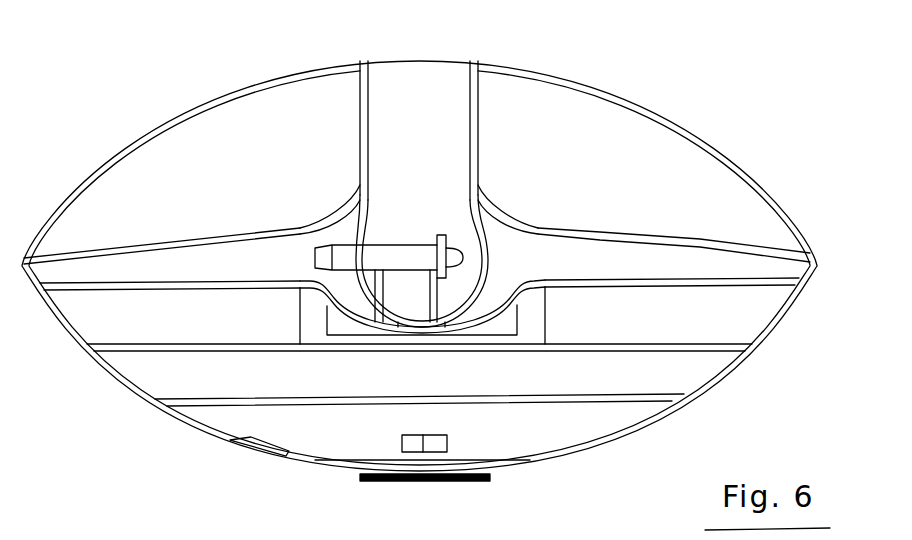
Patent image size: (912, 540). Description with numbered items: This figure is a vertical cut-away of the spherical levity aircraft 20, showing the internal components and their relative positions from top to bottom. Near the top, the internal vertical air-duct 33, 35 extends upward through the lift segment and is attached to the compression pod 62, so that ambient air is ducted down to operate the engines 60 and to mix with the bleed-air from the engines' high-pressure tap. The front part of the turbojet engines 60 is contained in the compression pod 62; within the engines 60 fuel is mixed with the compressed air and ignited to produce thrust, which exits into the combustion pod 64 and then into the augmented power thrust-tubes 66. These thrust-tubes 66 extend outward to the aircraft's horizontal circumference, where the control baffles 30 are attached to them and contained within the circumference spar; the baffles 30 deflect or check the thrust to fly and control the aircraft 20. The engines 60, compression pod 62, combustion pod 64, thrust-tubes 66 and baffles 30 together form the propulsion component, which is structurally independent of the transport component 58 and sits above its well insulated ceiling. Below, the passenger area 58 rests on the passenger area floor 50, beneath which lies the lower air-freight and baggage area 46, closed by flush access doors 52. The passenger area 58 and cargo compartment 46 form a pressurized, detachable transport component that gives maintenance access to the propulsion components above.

The spherical aircraft 20 is at (333, 66).
The control baffle 30 is at (22, 263).
The vertical air-duct 33 is at (435, 73).
The vertical air-duct 35 is at (415, 173).
The cargo compartment 46 is at (352, 433).
The passenger area floor 50 is at (552, 398).
The flush access doors 52 is at (255, 450).
The transport component 58 is at (228, 375).
The engines 60 is at (402, 255).
The compression pod 62 is at (487, 267).
The combustion pod 64 is at (293, 230).
The thrust-tubes 66 is at (652, 265).